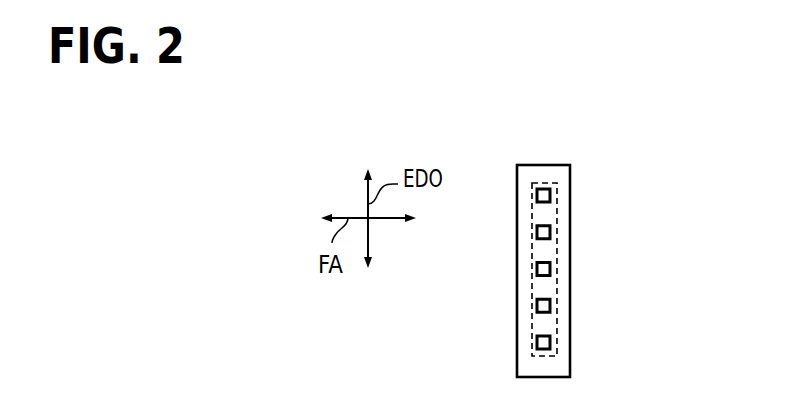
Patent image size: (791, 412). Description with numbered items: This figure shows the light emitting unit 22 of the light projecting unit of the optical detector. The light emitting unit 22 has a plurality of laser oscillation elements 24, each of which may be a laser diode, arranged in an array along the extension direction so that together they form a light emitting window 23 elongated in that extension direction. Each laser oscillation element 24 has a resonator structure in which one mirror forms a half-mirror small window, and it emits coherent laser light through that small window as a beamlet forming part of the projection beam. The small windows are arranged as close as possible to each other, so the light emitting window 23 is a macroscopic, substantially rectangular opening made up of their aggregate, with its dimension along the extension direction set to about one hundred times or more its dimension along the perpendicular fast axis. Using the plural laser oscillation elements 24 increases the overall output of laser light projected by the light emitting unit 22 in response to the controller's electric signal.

The light emitting unit 22 is at (553, 165).
The light emitting window 23 is at (532, 331).
The laser oscillation elements 24 is at (604, 271).